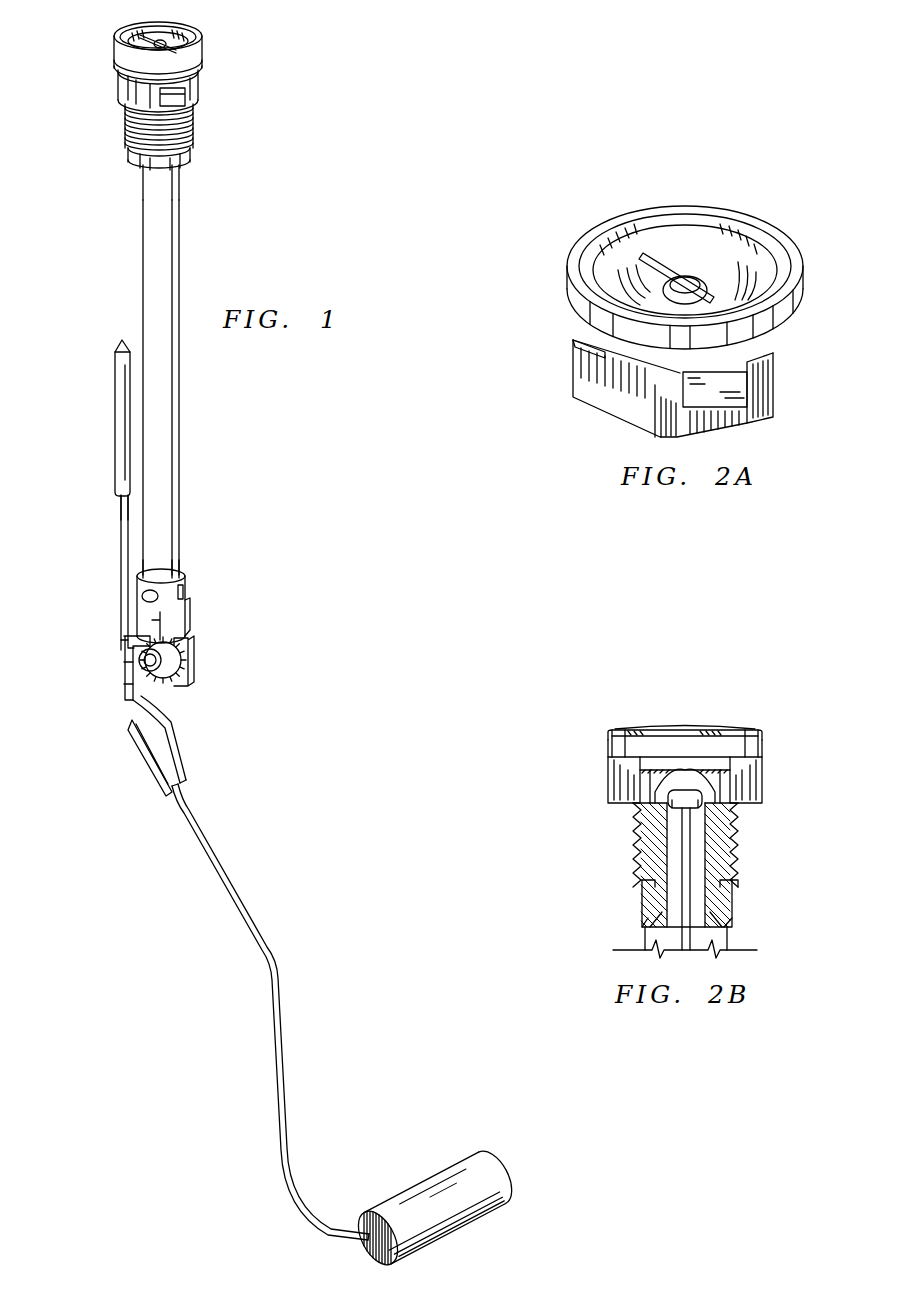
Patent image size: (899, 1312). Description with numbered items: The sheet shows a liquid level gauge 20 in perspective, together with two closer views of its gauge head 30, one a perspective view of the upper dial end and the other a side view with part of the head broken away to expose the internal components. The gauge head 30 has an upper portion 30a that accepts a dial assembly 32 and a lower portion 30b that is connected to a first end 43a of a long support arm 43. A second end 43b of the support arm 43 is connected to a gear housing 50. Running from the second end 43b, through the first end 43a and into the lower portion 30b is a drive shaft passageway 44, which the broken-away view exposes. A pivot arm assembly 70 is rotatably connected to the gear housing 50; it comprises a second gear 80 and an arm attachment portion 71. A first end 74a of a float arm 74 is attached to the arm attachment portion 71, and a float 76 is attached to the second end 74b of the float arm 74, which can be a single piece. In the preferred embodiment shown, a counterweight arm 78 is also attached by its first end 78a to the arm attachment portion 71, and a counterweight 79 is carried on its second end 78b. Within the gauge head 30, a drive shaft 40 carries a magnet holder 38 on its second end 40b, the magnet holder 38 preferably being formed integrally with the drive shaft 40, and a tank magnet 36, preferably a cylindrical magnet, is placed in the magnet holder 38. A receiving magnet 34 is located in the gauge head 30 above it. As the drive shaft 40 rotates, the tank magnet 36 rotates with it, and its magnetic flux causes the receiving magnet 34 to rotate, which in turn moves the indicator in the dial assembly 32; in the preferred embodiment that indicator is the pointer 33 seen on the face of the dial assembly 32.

In FIG. 1, the liquid level gauge 20 is at (250, 446).
In FIG. 1, the gauge head 30 is at (108, 61).
In FIG. 2B, the gauge head 30 is at (615, 683).
In FIG. 1, the upper portion 30a is at (214, 58).
In FIG. 2A, the upper portion 30a is at (560, 311).
In FIG. 2B, the upper portion 30a is at (605, 748).
In FIG. 1, the lower portion 30b is at (125, 159).
In FIG. 2B, the lower portion 30b is at (640, 940).
In FIG. 1, the dial assembly 32 is at (197, 22).
In FIG. 2A, the dial assembly 32 is at (757, 244).
In FIG. 2B, the dial assembly 32 is at (720, 728).
In FIG. 2A, the pointer 33 is at (672, 250).
In FIG. 2B, the receiving magnet 34 is at (684, 786).
In FIG. 2B, the tank magnet 36 is at (641, 826).
In FIG. 2B, the magnet holder 38 is at (666, 852).
In FIG. 2B, the drive shaft 40 is at (660, 876).
In FIG. 2B, the second end 40b is at (738, 835).
In FIG. 1, the support arm 43 is at (143, 268).
In FIG. 1, the first end 43a is at (180, 170).
In FIG. 2B, the first end 43a is at (727, 940).
In FIG. 1, the second end 43b is at (181, 557).
In FIG. 2B, the drive shaft passageway 44 is at (722, 860).
In FIG. 1, the gear housing 50 is at (203, 600).
In FIG. 1, the pivot arm assembly 70 is at (103, 678).
In FIG. 1, the arm attachment portion 71 is at (172, 725).
In FIG. 1, the float arm 74 is at (246, 915).
In FIG. 1, the first end 74a is at (190, 791).
In FIG. 1, the second end 74b is at (360, 1256).
In FIG. 1, the float 76 is at (414, 1186).
In FIG. 1, the counterweight arm 78 is at (121, 545).
In FIG. 1, the first end 78a is at (122, 633).
In FIG. 1, the second end 78b is at (112, 500).
In FIG. 1, the counterweight 79 is at (115, 412).
In FIG. 1, the second gear 80 is at (184, 658).